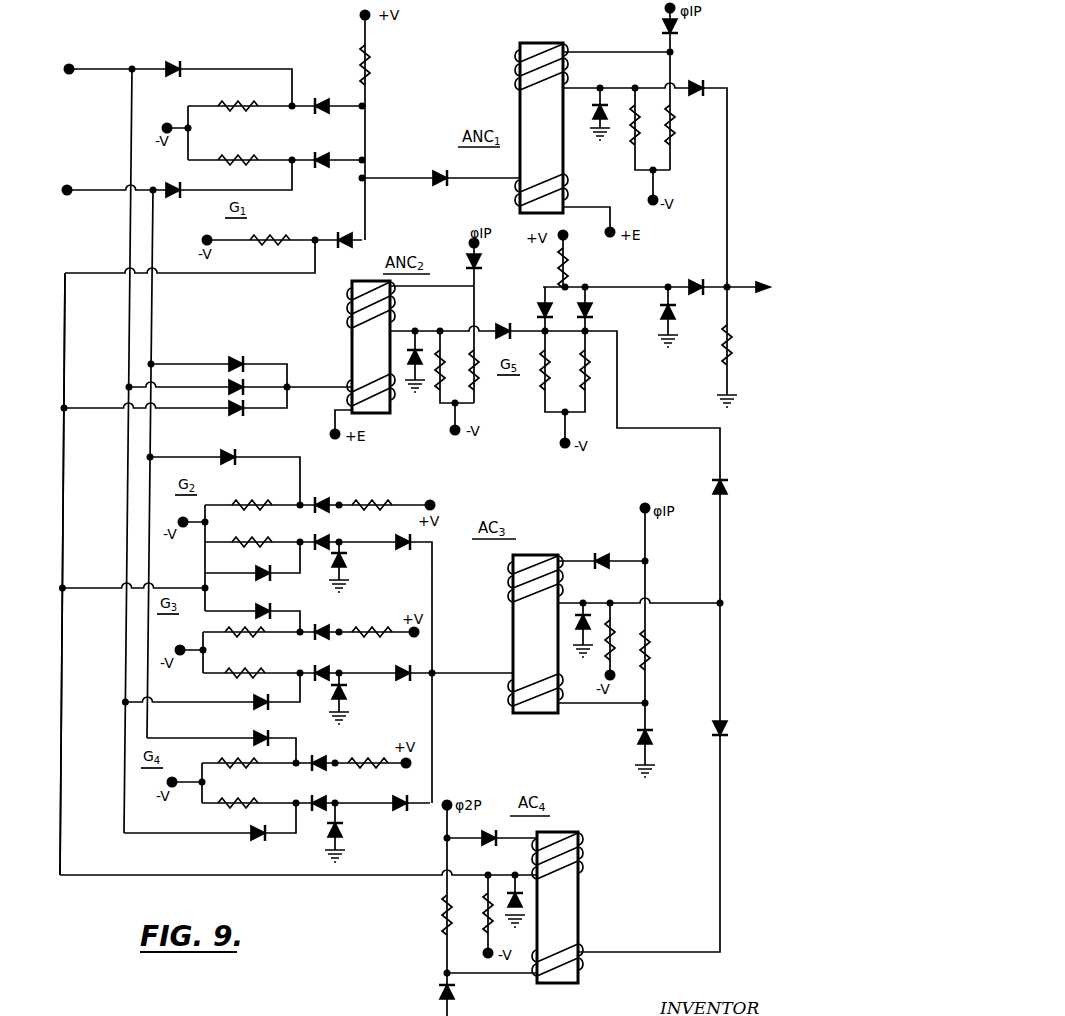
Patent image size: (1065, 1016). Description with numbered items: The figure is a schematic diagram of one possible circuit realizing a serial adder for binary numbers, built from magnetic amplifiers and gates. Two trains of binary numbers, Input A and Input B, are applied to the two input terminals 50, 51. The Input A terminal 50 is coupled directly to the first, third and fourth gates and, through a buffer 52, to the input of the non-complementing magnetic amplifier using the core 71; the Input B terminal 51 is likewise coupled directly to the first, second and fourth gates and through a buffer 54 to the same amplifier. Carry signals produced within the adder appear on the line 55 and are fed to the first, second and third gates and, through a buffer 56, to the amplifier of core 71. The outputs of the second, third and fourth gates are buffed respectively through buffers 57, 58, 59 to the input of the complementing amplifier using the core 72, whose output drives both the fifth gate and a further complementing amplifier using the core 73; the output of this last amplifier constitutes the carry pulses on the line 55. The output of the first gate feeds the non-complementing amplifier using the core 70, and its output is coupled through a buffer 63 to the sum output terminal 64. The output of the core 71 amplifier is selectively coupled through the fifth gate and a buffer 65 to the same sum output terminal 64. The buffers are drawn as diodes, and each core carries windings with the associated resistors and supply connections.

The Input A terminal 50 is at (72, 78).
The Input B terminal 51 is at (82, 174).
The buffer 52 is at (243, 386).
The buffer 54 is at (250, 362).
The carry line 55 is at (62, 818).
The buffer 56 is at (240, 432).
The buffer 57 is at (402, 536).
The buffer 58 is at (408, 668).
The buffer 59 is at (415, 798).
The buffer 63 is at (692, 98).
The sum output terminal 64 is at (760, 300).
The buffer 65 is at (697, 282).
The core 70 is at (540, 108).
The core 71 is at (365, 366).
The core 72 is at (530, 628).
The core 73 is at (560, 915).